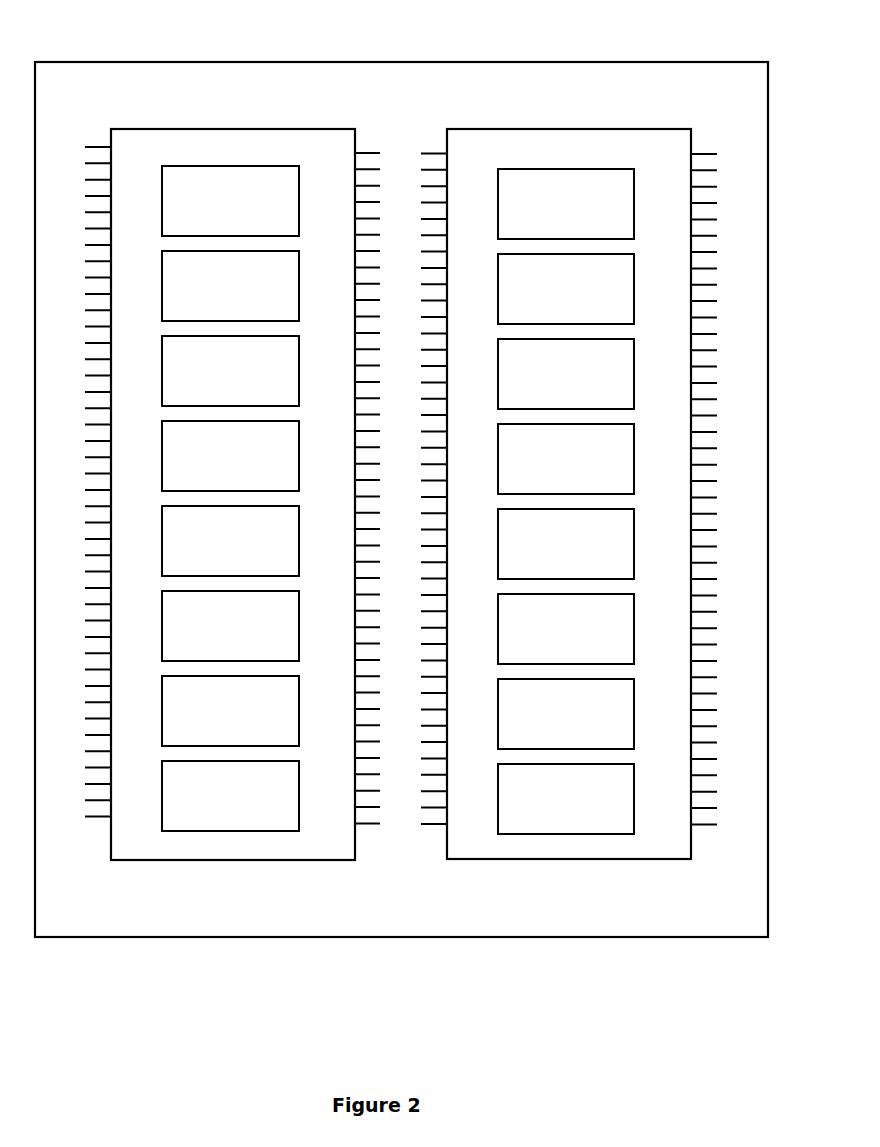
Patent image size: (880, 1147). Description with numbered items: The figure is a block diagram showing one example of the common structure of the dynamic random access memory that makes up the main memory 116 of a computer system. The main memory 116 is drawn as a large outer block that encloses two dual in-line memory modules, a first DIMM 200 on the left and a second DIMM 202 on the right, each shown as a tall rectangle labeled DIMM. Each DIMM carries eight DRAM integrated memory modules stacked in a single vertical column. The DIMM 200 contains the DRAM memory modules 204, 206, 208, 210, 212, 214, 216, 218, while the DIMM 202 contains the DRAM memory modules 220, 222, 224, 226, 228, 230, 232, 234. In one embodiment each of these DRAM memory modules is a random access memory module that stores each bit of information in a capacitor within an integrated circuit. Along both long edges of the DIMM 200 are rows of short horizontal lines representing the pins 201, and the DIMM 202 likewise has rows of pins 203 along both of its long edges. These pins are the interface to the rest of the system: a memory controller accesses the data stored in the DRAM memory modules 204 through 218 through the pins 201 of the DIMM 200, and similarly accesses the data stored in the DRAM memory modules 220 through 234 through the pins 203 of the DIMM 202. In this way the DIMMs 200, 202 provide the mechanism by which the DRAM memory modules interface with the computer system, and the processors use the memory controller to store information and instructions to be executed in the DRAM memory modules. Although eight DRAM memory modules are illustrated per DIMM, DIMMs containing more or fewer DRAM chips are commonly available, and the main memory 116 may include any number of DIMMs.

The main memory 116 is at (627, 62).
The DIMM 200 is at (241, 129).
The pins 201 is at (104, 118).
The DIMM 202 is at (576, 129).
The pins 203 is at (438, 122).
The DRAM memory module 204 is at (230, 201).
The DRAM memory module 206 is at (230, 286).
The DRAM memory module 208 is at (230, 371).
The DRAM memory module 210 is at (230, 456).
The DRAM memory module 212 is at (230, 541).
The DRAM memory module 214 is at (230, 626).
The DRAM memory module 216 is at (230, 711).
The DRAM memory module 218 is at (230, 796).
The DRAM memory module 220 is at (566, 204).
The DRAM memory module 222 is at (566, 289).
The DRAM memory module 224 is at (566, 374).
The DRAM memory module 226 is at (566, 459).
The DRAM memory module 228 is at (566, 544).
The DRAM memory module 230 is at (566, 629).
The DRAM memory module 232 is at (566, 714).
The DRAM memory module 234 is at (566, 799).